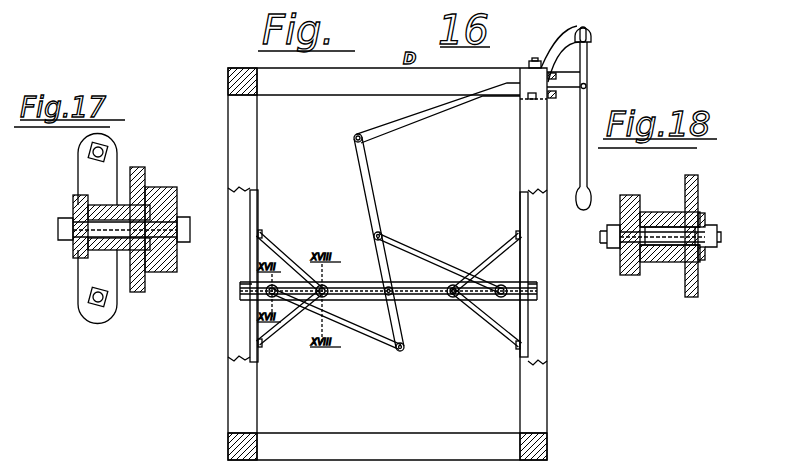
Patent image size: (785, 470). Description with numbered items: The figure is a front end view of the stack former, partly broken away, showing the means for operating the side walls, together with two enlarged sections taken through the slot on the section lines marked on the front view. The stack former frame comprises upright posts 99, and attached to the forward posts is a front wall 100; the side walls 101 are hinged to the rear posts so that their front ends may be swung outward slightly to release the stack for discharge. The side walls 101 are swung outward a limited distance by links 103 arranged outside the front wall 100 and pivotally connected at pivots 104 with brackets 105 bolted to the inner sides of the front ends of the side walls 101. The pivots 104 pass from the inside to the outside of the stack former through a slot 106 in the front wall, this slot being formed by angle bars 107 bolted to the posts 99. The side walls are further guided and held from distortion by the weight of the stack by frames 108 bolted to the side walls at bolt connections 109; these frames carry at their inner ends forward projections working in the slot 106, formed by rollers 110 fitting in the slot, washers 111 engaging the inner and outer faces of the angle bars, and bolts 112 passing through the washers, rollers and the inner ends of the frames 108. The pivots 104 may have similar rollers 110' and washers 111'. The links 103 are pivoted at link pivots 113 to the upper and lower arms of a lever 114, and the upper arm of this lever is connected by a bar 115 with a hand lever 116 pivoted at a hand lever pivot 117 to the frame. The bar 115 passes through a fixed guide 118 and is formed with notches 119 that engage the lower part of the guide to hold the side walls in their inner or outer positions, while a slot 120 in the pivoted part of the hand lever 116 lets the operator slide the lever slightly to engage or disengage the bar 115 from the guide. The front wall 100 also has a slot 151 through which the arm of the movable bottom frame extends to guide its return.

In FIG. 16, the upright post 99 is at (229, 115).
In FIG. 16, the front wall 100 is at (293, 151).
In FIG. 16, the side wall 101 is at (250, 200).
In FIG. 16, the link 103 is at (410, 252).
In FIG. 16, the pivot 104 is at (266, 297).
In FIG. 17, the pivot 104 is at (58, 229).
In FIG. 16, the bracket 105 is at (242, 291).
In FIG. 17, the bracket 105 is at (75, 244).
In FIG. 16, the slot 106 is at (296, 283).
In FIG. 16, the angle bar 107 is at (350, 282).
In FIG. 17, the angle bar 107 is at (144, 168).
In FIG. 18, the angle bar 107 is at (698, 181).
In FIG. 16, the frame 108 is at (282, 325).
In FIG. 18, the frame 108 is at (632, 195).
In FIG. 16, the bolt connection 109 is at (262, 230).
In FIG. 18, the roller 110 is at (670, 253).
In FIG. 17, the roller 110' is at (52, 210).
In FIG. 16, the washer 111 is at (423, 275).
In FIG. 18, the washer 111 is at (698, 228).
In FIG. 17, the washer 111' is at (73, 229).
In FIG. 16, the bolt 112 is at (325, 286).
In FIG. 18, the bolt 112 is at (714, 234).
In FIG. 16, the link pivot 113 is at (374, 236).
In FIG. 16, the lever 114 is at (372, 190).
In FIG. 16, the bar 115 is at (430, 119).
In FIG. 16, the hand lever 116 is at (580, 162).
In FIG. 16, the hand lever pivot 117 is at (592, 34).
In FIG. 16, the fixed guide 118 is at (556, 78).
In FIG. 16, the notch 119 is at (528, 96).
In FIG. 16, the slot 120 is at (591, 44).
In FIG. 16, the slot 151 is at (385, 362).